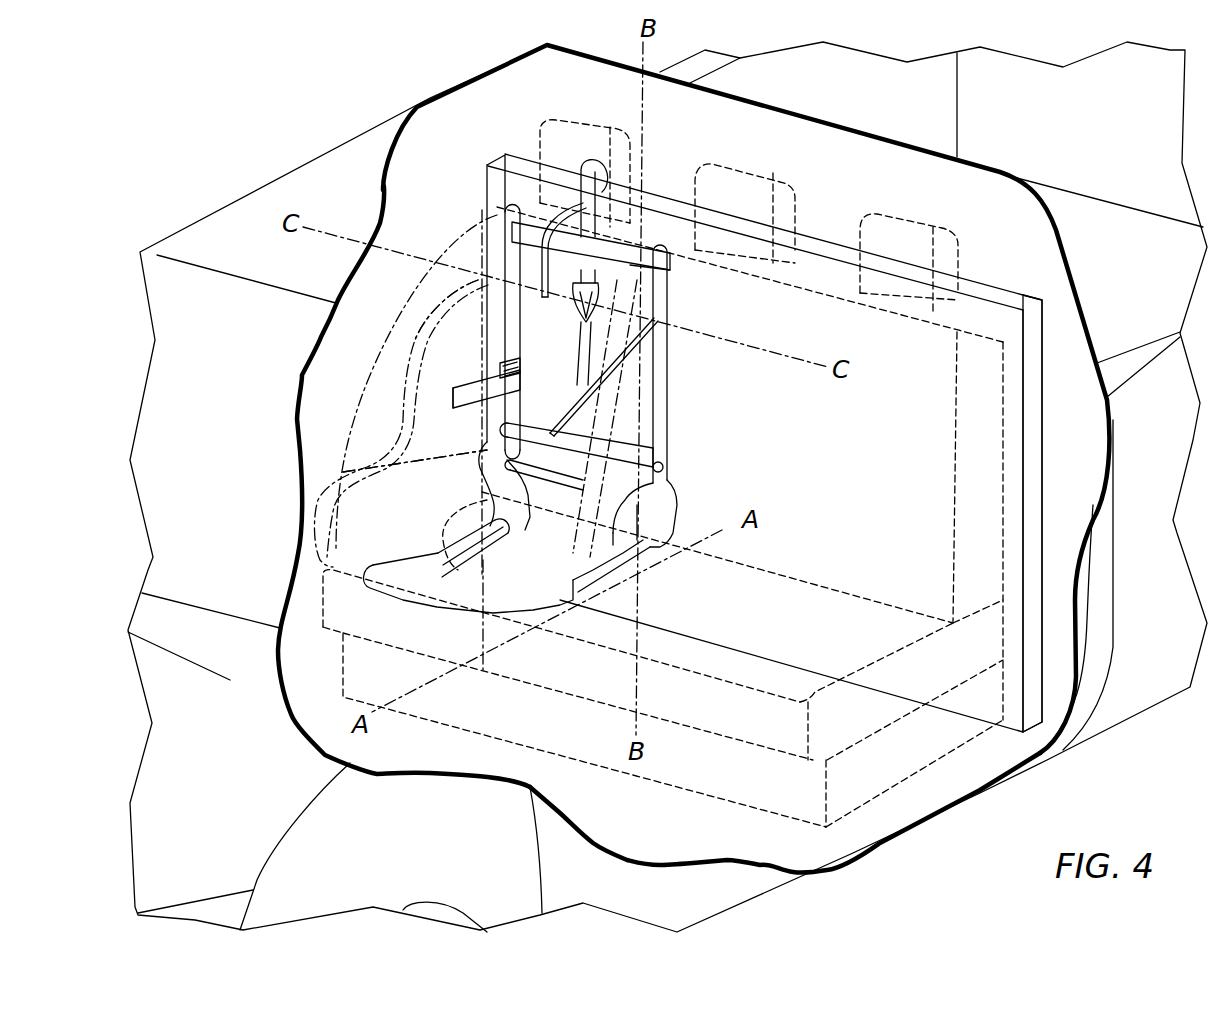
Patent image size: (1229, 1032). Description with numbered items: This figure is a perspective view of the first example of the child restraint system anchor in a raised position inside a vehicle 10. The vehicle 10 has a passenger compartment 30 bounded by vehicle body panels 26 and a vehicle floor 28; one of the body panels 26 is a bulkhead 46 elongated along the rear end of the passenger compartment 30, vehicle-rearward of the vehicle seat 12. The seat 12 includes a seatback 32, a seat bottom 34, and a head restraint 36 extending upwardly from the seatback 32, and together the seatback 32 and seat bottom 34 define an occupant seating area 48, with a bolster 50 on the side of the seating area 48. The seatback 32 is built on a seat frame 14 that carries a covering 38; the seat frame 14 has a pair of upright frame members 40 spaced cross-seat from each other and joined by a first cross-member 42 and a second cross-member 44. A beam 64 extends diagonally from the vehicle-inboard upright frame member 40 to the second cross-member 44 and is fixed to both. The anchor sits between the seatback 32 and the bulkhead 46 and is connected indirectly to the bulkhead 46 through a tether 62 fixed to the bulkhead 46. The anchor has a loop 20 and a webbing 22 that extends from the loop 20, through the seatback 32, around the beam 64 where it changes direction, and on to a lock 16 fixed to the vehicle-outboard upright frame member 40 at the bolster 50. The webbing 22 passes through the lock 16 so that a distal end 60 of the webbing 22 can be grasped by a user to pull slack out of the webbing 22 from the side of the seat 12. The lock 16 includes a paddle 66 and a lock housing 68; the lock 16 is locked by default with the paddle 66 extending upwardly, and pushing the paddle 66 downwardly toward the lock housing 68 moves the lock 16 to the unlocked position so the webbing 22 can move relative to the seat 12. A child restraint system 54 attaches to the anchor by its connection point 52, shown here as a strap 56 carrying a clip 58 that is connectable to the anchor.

The vehicle 10 is at (270, 99).
The vehicle seat 12 is at (980, 271).
The seat frame 14 is at (671, 422).
The lock 16 is at (500, 363).
The loop 20 is at (645, 313).
The webbing 22 is at (583, 360).
The vehicle body panels 26 is at (1030, 296).
The vehicle floor 28 is at (772, 852).
The passenger compartment 30 is at (962, 196).
The seatback 32 is at (1006, 505).
The seat bottom 34 is at (815, 690).
The head restraint 36 is at (613, 127).
The covering 38 is at (1009, 464).
The upright frame members 40 is at (513, 273).
The first cross-member 42 is at (628, 273).
The second cross-member 44 is at (673, 466).
The bulkhead 46 is at (1035, 340).
The occupant seating area 48 is at (371, 357).
The bolster 50 is at (488, 262).
The connection point 52 is at (553, 205).
The child restraint system 54 is at (343, 472).
The strap 56 is at (560, 197).
The clip 58 is at (600, 268).
The distal end 60 is at (453, 396).
The tether 62 is at (592, 163).
The beam 64 is at (633, 440).
The paddle 66 is at (487, 428).
The lock housing 68 is at (503, 363).